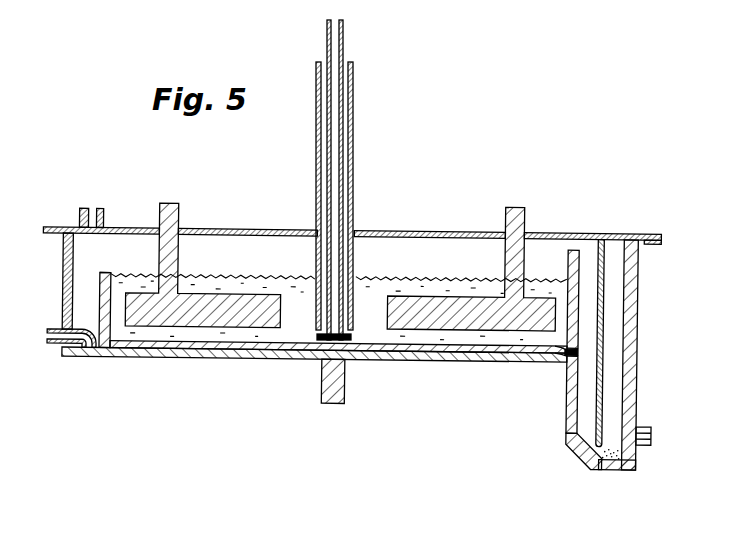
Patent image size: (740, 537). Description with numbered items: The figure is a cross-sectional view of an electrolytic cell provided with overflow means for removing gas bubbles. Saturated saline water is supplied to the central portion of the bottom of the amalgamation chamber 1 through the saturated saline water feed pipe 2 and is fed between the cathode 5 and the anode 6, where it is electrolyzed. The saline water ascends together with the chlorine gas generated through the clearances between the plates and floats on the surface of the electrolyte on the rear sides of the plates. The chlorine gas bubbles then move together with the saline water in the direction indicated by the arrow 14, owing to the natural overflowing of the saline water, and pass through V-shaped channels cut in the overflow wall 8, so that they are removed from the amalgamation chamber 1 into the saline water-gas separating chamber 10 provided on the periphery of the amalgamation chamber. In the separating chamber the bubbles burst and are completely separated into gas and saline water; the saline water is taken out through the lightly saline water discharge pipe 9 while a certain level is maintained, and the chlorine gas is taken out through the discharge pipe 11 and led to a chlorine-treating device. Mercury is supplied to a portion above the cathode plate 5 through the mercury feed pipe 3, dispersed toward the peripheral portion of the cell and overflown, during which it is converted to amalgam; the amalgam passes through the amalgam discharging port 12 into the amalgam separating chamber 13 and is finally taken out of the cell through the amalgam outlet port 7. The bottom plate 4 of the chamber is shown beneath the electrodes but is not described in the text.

The amalgamation chamber 1 is at (371, 338).
The saturated saline water feed pipe 2 is at (353, 83).
The mercury feed pipe 3 is at (338, 30).
The pan bottom plate 4 is at (382, 357).
The cathode 5 is at (322, 383).
The anode 6 is at (213, 322).
The amalgam outlet port 7 is at (643, 427).
The overflow wall 8 is at (100, 290).
The lightly saline water discharge pipe 9 is at (56, 344).
The saline water-gas separating chamber 10 is at (82, 304).
The discharge pipe 11 is at (96, 207).
The amalgam discharging port 12 is at (565, 358).
The amalgam separating chamber 13 is at (600, 458).
The arrow 14 is at (99, 270).